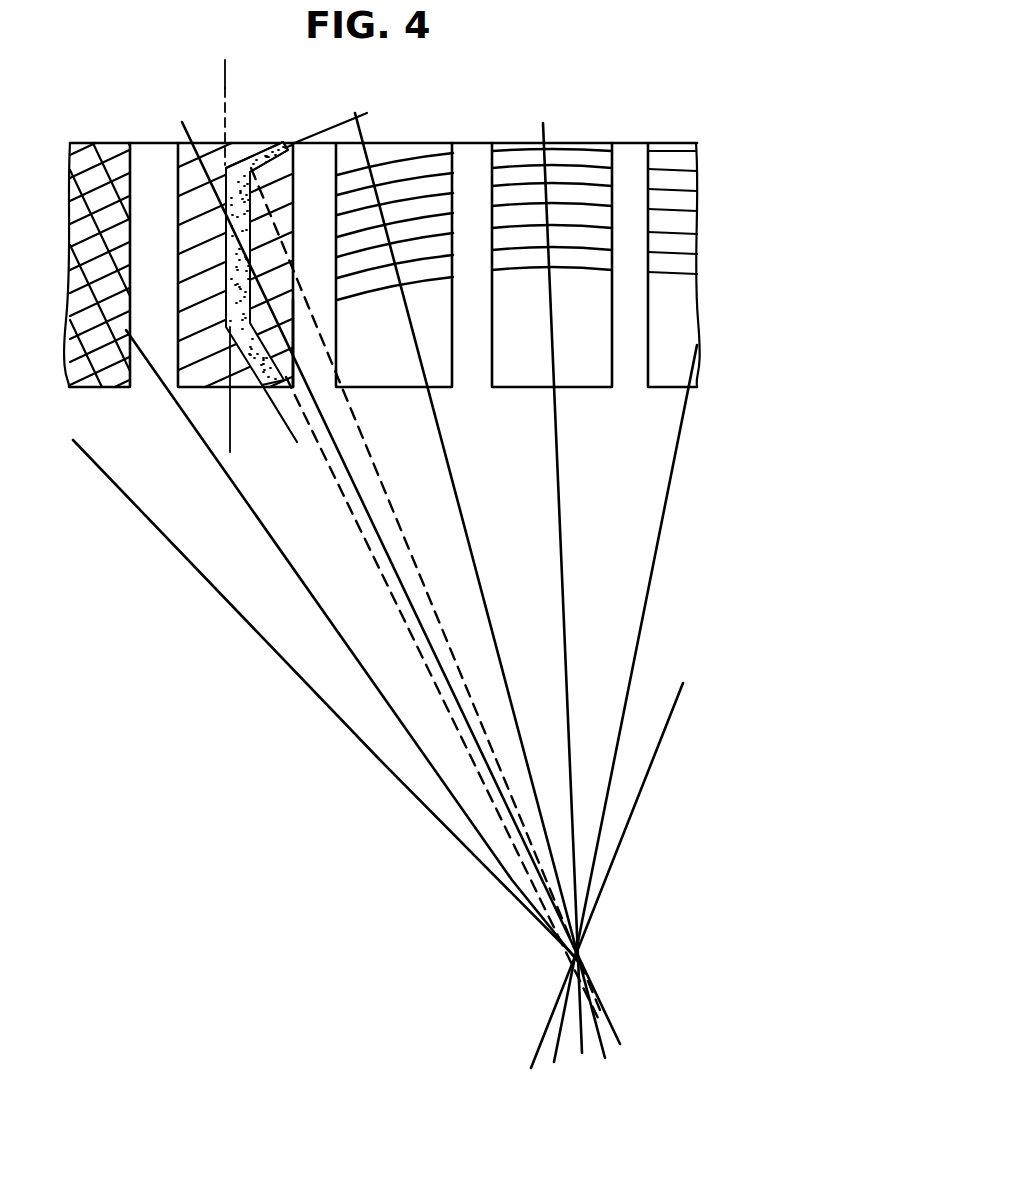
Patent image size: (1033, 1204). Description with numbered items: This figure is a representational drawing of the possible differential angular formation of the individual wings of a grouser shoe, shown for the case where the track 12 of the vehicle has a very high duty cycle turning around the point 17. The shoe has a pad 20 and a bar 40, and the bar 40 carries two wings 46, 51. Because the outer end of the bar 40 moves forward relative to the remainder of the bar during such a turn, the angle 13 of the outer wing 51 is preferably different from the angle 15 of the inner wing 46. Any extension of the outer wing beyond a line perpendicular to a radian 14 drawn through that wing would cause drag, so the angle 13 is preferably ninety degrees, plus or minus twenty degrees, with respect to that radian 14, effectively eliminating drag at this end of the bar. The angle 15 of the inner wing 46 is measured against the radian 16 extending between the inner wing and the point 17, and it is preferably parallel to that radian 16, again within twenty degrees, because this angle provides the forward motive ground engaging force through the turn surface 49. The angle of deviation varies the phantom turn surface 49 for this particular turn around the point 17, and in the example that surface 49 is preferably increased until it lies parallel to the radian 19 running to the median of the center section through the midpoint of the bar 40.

The track 12 is at (495, 128).
The angle of the outer wing 13 is at (227, 85).
The radian through the outer wing 14 is at (384, 495).
The angle of the inner wing 15 is at (283, 424).
The radian extending between the inner wing and the point 16 is at (367, 533).
The point 17 is at (581, 951).
The radian to the median of the center section 19 is at (338, 448).
The pad 20 is at (525, 380).
The bar 40 is at (218, 263).
The wing 46 is at (246, 362).
The turn surface 49 is at (281, 352).
The wing 51 is at (283, 142).